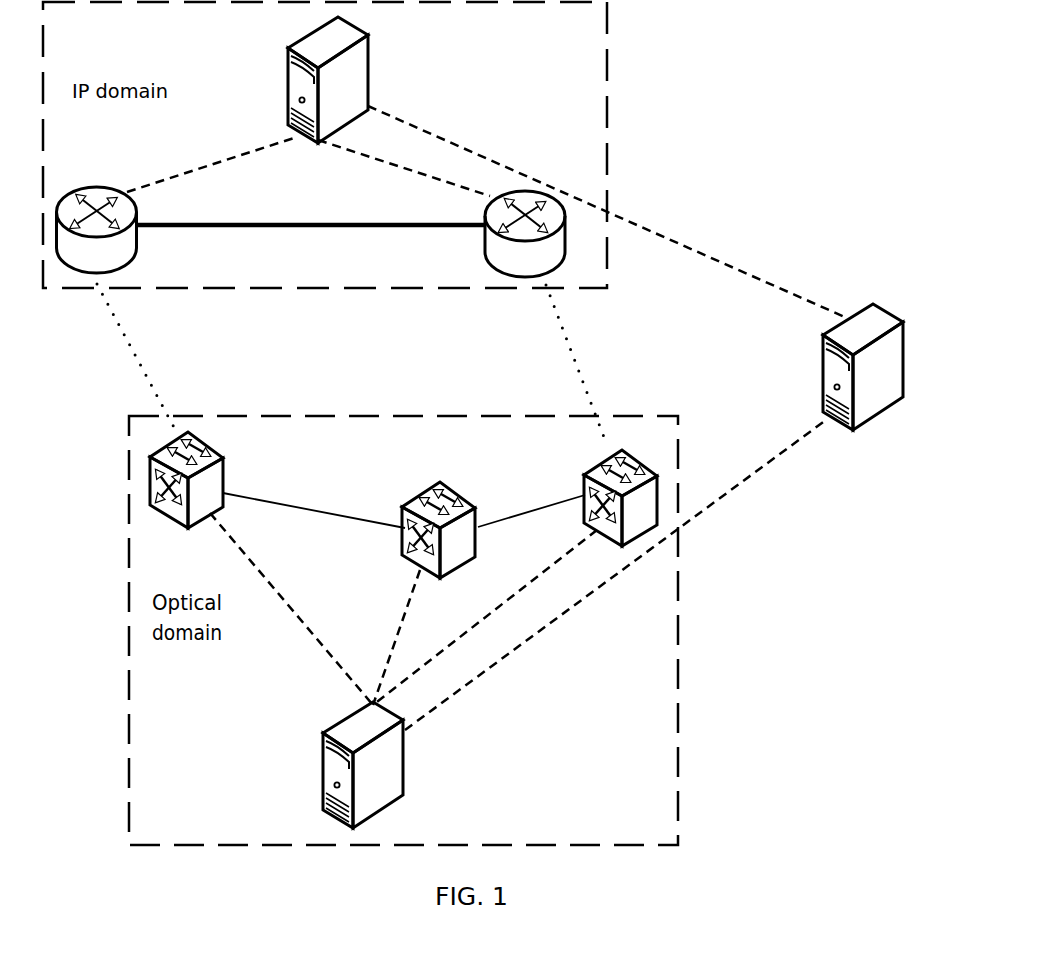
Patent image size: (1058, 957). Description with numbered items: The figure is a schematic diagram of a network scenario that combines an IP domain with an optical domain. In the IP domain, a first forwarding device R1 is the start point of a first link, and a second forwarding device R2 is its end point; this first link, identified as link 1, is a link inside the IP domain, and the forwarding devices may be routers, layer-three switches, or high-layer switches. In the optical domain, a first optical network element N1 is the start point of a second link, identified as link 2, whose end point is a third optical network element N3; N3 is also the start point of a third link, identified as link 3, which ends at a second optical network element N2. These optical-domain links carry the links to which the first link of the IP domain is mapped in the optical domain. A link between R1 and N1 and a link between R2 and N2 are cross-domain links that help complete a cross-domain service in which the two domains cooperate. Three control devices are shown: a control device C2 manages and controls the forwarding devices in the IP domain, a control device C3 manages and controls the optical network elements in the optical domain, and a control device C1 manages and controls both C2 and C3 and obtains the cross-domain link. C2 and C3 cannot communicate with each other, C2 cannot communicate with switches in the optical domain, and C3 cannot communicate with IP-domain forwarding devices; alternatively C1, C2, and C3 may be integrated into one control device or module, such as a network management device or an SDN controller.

The first forwarding device R1 is at (97, 217).
The second forwarding device R2 is at (521, 222).
The first link link 1 is at (310, 209).
The control device C1 is at (846, 367).
The control device C2 is at (309, 80).
The control device C3 is at (344, 765).
The first optical network element N1 is at (207, 480).
The second optical network element N2 is at (608, 496).
The third optical network element N3 is at (427, 528).
The second link link 2 is at (314, 501).
The third link link 3 is at (531, 496).